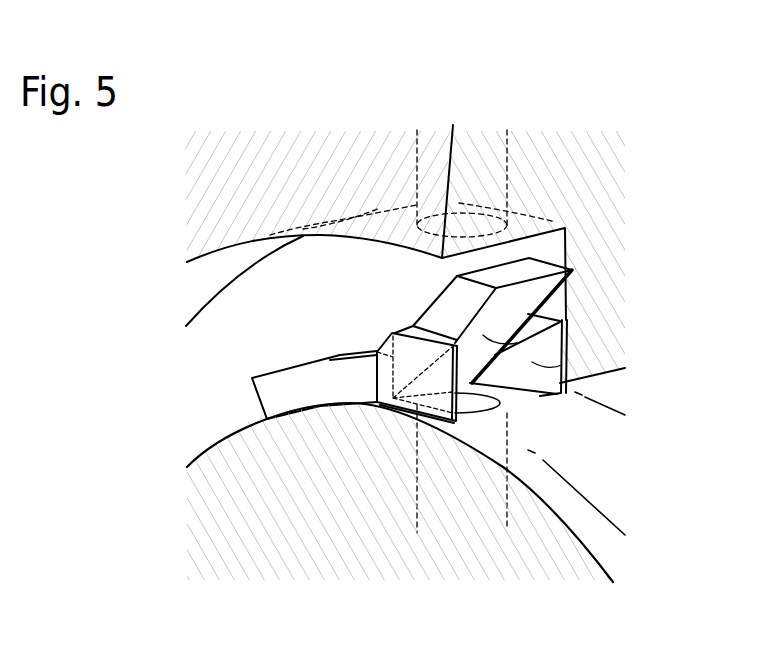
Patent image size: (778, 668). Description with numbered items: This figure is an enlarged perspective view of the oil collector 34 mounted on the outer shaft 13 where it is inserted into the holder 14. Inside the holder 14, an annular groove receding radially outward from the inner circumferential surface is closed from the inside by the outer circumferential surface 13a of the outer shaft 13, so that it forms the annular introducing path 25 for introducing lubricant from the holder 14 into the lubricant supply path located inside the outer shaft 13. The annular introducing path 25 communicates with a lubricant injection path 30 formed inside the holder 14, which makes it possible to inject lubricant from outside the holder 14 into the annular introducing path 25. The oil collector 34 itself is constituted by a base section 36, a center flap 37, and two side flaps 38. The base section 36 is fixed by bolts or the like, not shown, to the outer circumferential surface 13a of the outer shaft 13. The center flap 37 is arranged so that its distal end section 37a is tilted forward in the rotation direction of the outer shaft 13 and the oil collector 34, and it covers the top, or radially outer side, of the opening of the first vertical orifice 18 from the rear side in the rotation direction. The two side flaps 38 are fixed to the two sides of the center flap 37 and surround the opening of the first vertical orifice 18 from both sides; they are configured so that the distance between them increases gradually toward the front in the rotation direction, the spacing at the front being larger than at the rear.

The outer shaft 13 is at (214, 510).
The outer circumferential surface 13a is at (533, 468).
The holder 14 is at (215, 190).
The first vertical orifice 18 is at (507, 400).
The annular introducing path 25 is at (262, 307).
The lubricant injection path 30 is at (473, 170).
The oil collector 34 is at (283, 363).
The base section 36 is at (257, 396).
The center flap 37 is at (563, 333).
The distal end section 37a is at (528, 257).
The side flaps 38 is at (403, 367).